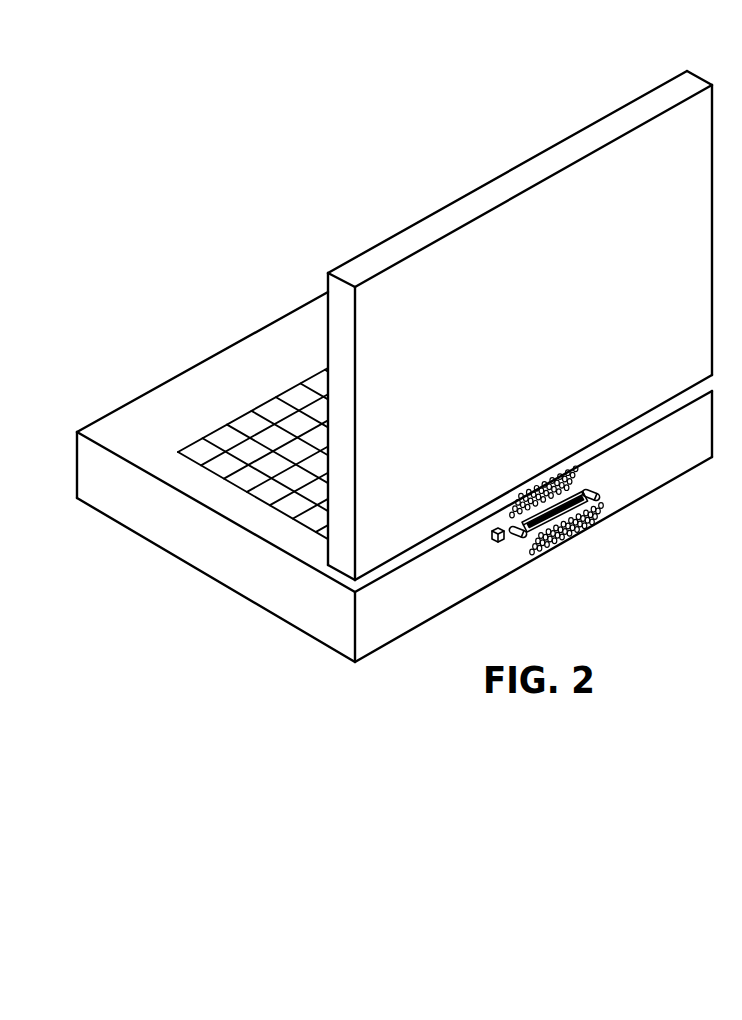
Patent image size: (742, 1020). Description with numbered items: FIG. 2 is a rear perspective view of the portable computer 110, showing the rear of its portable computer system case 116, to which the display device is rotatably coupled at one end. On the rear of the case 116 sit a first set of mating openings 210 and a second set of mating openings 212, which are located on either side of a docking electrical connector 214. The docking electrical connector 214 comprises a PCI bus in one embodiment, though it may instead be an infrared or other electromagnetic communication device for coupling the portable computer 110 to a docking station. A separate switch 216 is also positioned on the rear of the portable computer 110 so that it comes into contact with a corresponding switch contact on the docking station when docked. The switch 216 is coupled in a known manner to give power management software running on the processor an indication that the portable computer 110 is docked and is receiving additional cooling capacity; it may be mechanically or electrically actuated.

The portable computer system 110 is at (196, 623).
The portable computer system case 116 is at (268, 340).
The first set of mating openings 210 is at (560, 544).
The second set of mating openings 212 is at (582, 482).
The docking electrical connector 214 is at (597, 522).
The switch 216 is at (500, 542).